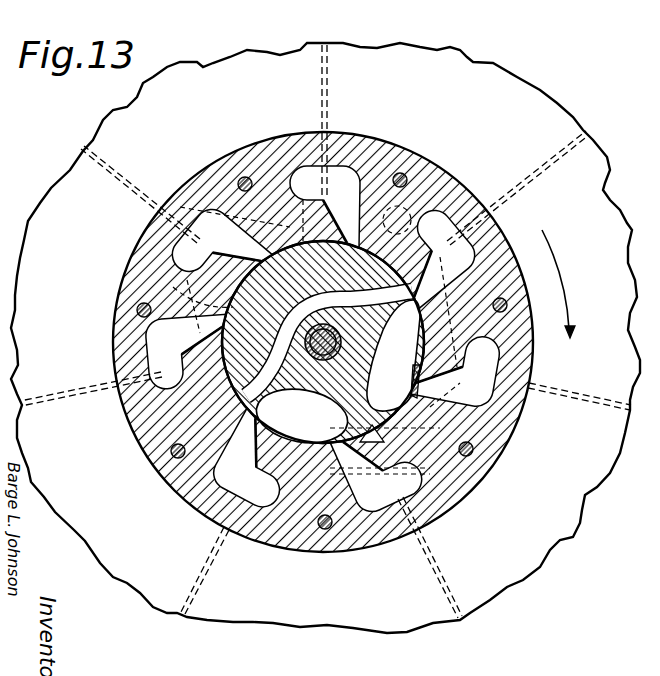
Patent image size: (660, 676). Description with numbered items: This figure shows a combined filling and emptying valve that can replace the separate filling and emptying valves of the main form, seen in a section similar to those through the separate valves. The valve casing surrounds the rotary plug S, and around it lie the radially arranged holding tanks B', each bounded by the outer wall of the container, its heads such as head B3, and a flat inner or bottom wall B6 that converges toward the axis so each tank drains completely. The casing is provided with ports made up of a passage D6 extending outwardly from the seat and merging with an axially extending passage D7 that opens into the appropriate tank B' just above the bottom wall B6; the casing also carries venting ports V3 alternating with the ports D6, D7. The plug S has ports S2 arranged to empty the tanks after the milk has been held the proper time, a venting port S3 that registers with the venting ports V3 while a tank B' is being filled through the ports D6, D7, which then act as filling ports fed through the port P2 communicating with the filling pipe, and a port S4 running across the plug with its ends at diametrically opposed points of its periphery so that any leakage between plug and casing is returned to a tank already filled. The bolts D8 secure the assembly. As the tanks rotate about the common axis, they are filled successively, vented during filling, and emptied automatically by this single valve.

The tank B' is at (325, 338).
The inner or bottom wall B6 is at (483, 320).
The plug S is at (233, 320).
The axially extending passage D7 is at (305, 168).
The passage D6 is at (355, 200).
The venting port V3 is at (292, 500).
The port S4 is at (329, 343).
The port S2 is at (393, 355).
The piston P2 is at (302, 415).
The venting port S3 is at (372, 425).
The bolt D8 is at (490, 453).
The head B3 is at (325, 331).